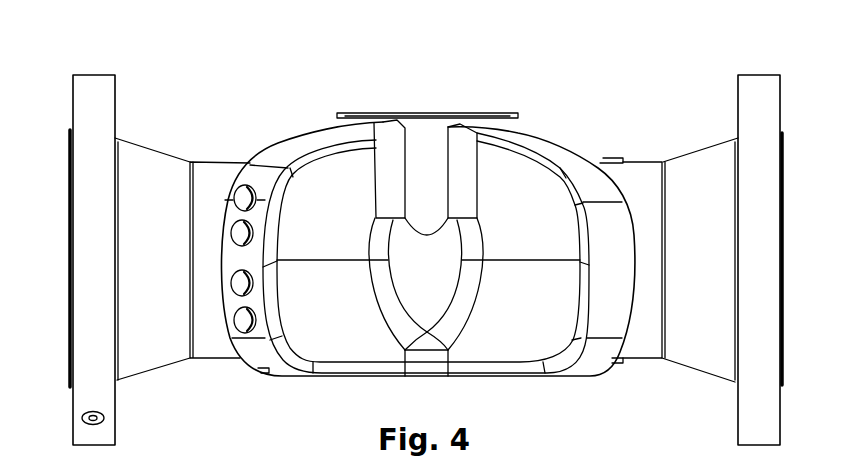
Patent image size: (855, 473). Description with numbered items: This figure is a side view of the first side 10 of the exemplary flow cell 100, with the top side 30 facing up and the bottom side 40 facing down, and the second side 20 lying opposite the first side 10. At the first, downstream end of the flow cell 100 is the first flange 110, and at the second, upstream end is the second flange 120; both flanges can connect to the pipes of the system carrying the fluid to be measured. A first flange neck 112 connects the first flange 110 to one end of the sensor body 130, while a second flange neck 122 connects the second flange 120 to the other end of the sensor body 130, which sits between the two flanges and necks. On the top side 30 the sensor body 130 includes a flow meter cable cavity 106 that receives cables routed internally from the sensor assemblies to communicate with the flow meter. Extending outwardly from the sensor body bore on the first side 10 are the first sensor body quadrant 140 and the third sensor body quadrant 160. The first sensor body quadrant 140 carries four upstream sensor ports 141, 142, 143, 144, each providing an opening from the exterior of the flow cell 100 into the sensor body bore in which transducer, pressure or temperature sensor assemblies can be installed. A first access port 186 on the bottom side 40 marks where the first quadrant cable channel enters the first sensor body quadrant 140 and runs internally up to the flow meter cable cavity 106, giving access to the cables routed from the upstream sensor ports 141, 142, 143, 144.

The first side 10 is at (60, 200).
The second side 20 is at (790, 200).
The top side 30 is at (402, 95).
The bottom side 40 is at (382, 388).
The flow cell 100 is at (454, 55).
The flow meter cable cavity 106 is at (427, 110).
The first flange 110 is at (93, 90).
The first flange neck 112 is at (143, 157).
The second flange 120 is at (755, 83).
The second flange neck 122 is at (707, 162).
The sensor body 130 is at (208, 167).
The first sensor body quadrant 140 is at (327, 178).
The upstream sensor port 141 is at (236, 195).
The upstream sensor port 142 is at (233, 233).
The upstream sensor port 143 is at (232, 283).
The upstream sensor port 144 is at (235, 318).
The third sensor body quadrant 160 is at (517, 180).
The first access port 186 is at (263, 373).